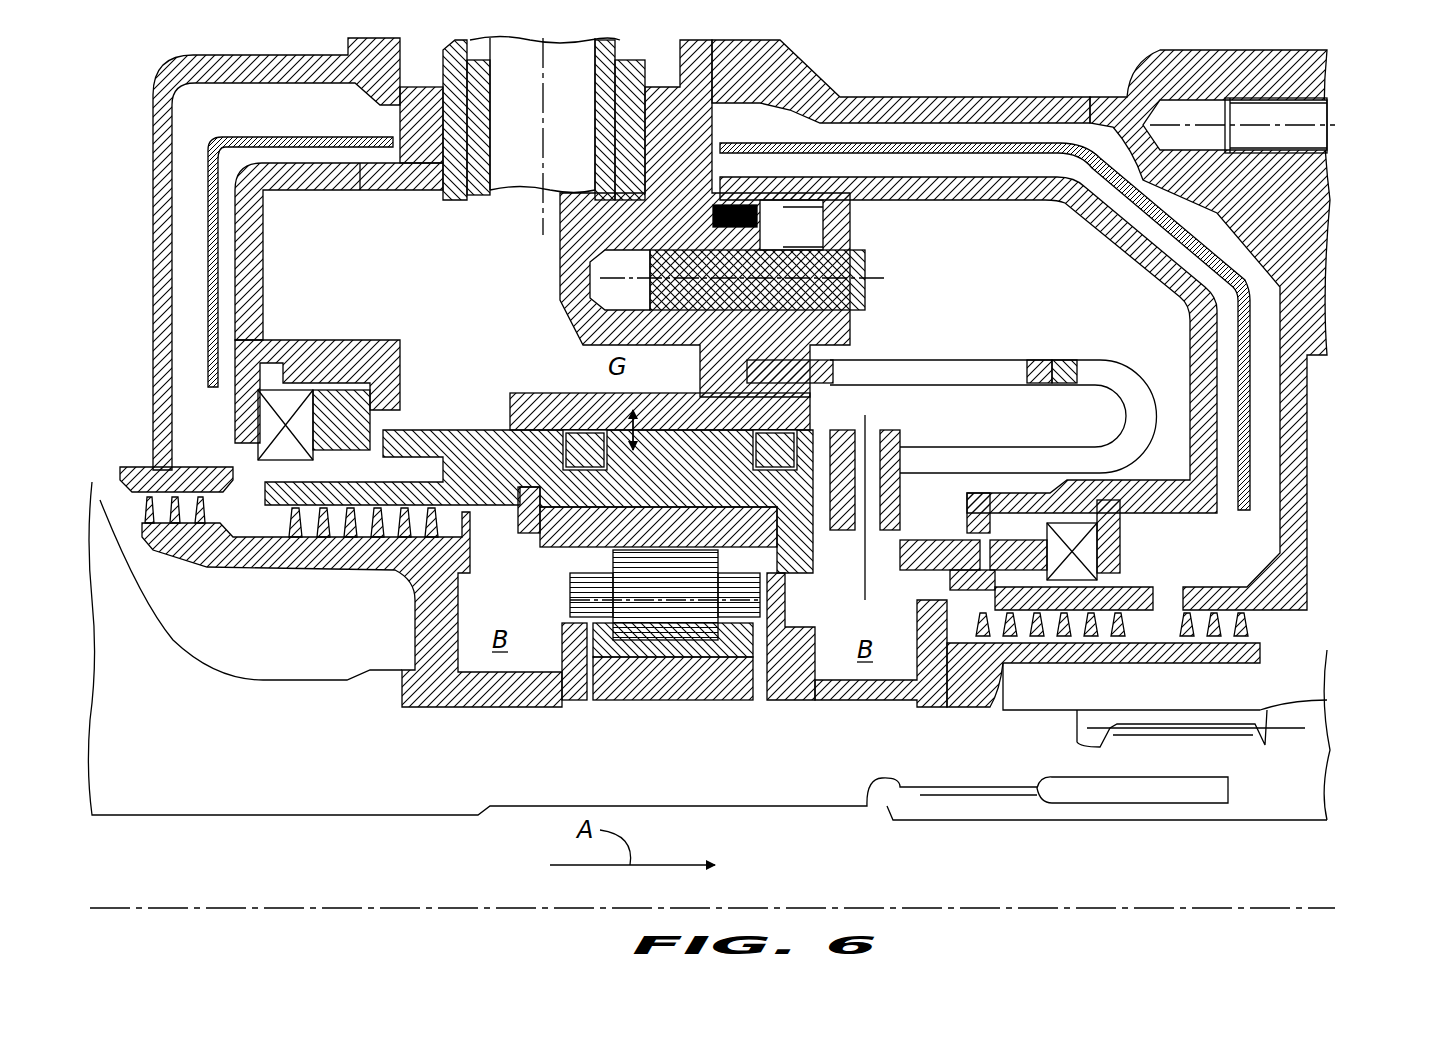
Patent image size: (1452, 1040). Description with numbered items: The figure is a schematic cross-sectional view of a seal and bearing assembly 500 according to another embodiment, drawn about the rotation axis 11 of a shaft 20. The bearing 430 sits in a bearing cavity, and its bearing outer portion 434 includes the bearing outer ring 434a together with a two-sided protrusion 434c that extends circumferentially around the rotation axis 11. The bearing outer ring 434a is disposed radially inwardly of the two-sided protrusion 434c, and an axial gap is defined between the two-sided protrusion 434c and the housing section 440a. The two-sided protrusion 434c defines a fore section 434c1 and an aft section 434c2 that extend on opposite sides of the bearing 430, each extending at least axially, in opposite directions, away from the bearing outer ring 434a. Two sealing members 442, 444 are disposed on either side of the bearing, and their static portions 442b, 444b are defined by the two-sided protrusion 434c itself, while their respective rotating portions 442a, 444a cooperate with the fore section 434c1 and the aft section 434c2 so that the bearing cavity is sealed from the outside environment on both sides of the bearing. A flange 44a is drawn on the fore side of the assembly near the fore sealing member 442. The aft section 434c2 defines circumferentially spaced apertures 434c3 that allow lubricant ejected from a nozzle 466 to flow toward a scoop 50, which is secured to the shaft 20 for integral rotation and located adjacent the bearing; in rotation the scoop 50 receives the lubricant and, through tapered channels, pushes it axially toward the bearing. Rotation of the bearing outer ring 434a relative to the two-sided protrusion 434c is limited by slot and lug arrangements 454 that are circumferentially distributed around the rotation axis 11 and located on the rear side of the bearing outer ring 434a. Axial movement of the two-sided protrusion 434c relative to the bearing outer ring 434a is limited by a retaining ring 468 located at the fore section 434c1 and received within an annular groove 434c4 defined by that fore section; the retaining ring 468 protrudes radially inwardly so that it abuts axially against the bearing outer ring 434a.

The seal and bearing assembly 500 is at (1348, 70).
The nozzle 466 is at (878, 460).
The bearing outer portion 434 is at (752, 439).
The housing section 440a is at (497, 395).
The fore section 434c1 is at (483, 455).
The annular groove 434c4 is at (556, 440).
The two-sided protrusion 434c is at (680, 460).
The circumferentially spaced apertures 434c3 is at (900, 553).
The aft section 434c2 is at (1150, 580).
The static portion 444b is at (1297, 578).
The sealing member 444 is at (1189, 460).
The flange 44a is at (238, 570).
The static portion 442b is at (277, 520).
The sealing member 442 is at (341, 404).
The retaining ring 468 is at (520, 555).
The bearing outer ring 434a is at (622, 527).
The scoop 50 is at (918, 636).
The rotating portion 442a is at (437, 682).
The bearing 430 is at (650, 712).
The slot and lug arrangements 454 is at (760, 556).
The rotating portion 444a is at (968, 695).
The shaft 20 is at (820, 805).
The rotation axis 11 is at (1165, 910).